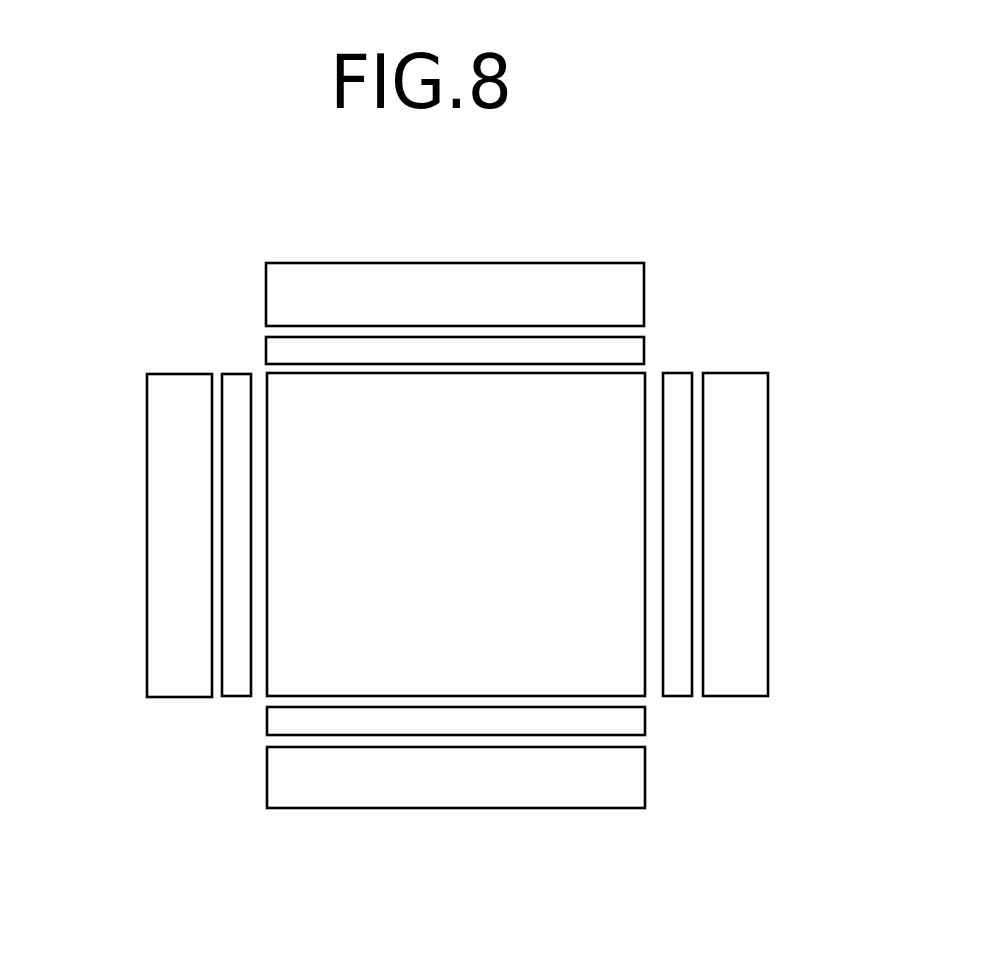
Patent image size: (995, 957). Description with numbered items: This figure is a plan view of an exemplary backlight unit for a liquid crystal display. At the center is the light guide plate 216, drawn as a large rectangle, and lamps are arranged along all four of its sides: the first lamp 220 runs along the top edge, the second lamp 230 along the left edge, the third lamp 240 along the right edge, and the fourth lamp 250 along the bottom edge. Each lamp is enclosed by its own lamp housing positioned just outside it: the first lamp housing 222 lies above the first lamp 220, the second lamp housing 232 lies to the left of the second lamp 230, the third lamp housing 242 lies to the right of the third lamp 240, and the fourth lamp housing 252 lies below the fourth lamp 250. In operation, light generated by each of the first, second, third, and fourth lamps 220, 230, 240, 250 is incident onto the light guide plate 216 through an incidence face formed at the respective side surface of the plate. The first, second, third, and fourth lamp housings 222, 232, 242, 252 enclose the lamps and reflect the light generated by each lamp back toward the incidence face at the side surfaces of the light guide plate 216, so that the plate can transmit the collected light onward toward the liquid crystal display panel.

The light guide plate 216 is at (273, 378).
The first lamp 220 is at (642, 337).
The first lamp housing 222 is at (560, 267).
The second lamp 230 is at (233, 693).
The second lamp housing 232 is at (150, 608).
The third lamp 240 is at (685, 693).
The third lamp housing 242 is at (760, 635).
The fourth lamp 250 is at (442, 728).
The fourth lamp housing 252 is at (585, 802).